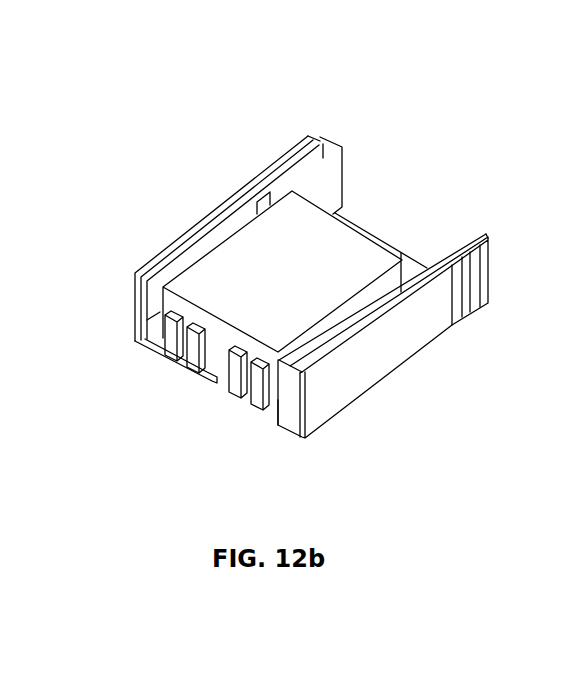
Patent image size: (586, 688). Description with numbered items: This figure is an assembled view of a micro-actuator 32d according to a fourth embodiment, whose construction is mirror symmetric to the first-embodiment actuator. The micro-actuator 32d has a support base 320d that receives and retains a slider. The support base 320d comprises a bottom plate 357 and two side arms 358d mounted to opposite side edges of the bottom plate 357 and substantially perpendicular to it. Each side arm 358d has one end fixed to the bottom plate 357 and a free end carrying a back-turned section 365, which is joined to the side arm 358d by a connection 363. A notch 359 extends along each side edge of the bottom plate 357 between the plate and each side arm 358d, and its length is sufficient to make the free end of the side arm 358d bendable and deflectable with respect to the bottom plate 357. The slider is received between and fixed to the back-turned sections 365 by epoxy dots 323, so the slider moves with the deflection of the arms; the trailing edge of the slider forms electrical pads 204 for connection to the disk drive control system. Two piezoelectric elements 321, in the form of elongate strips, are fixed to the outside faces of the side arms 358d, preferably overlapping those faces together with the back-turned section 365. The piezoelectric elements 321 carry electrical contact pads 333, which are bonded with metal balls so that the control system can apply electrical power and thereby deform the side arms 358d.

The electrical pads 204 is at (155, 348).
The piezoelectric (PZT) elements 321 is at (160, 258).
The epoxy dots 323 is at (275, 195).
The connection 363 is at (333, 140).
The back-turned section 365 is at (322, 180).
The bottom plate 357 is at (390, 245).
The side arms 358d is at (483, 235).
The electrical contact pads 333 is at (473, 282).
The support base 320d is at (170, 356).
The micro-actuator 32d is at (190, 383).
The notch 359 is at (250, 407).